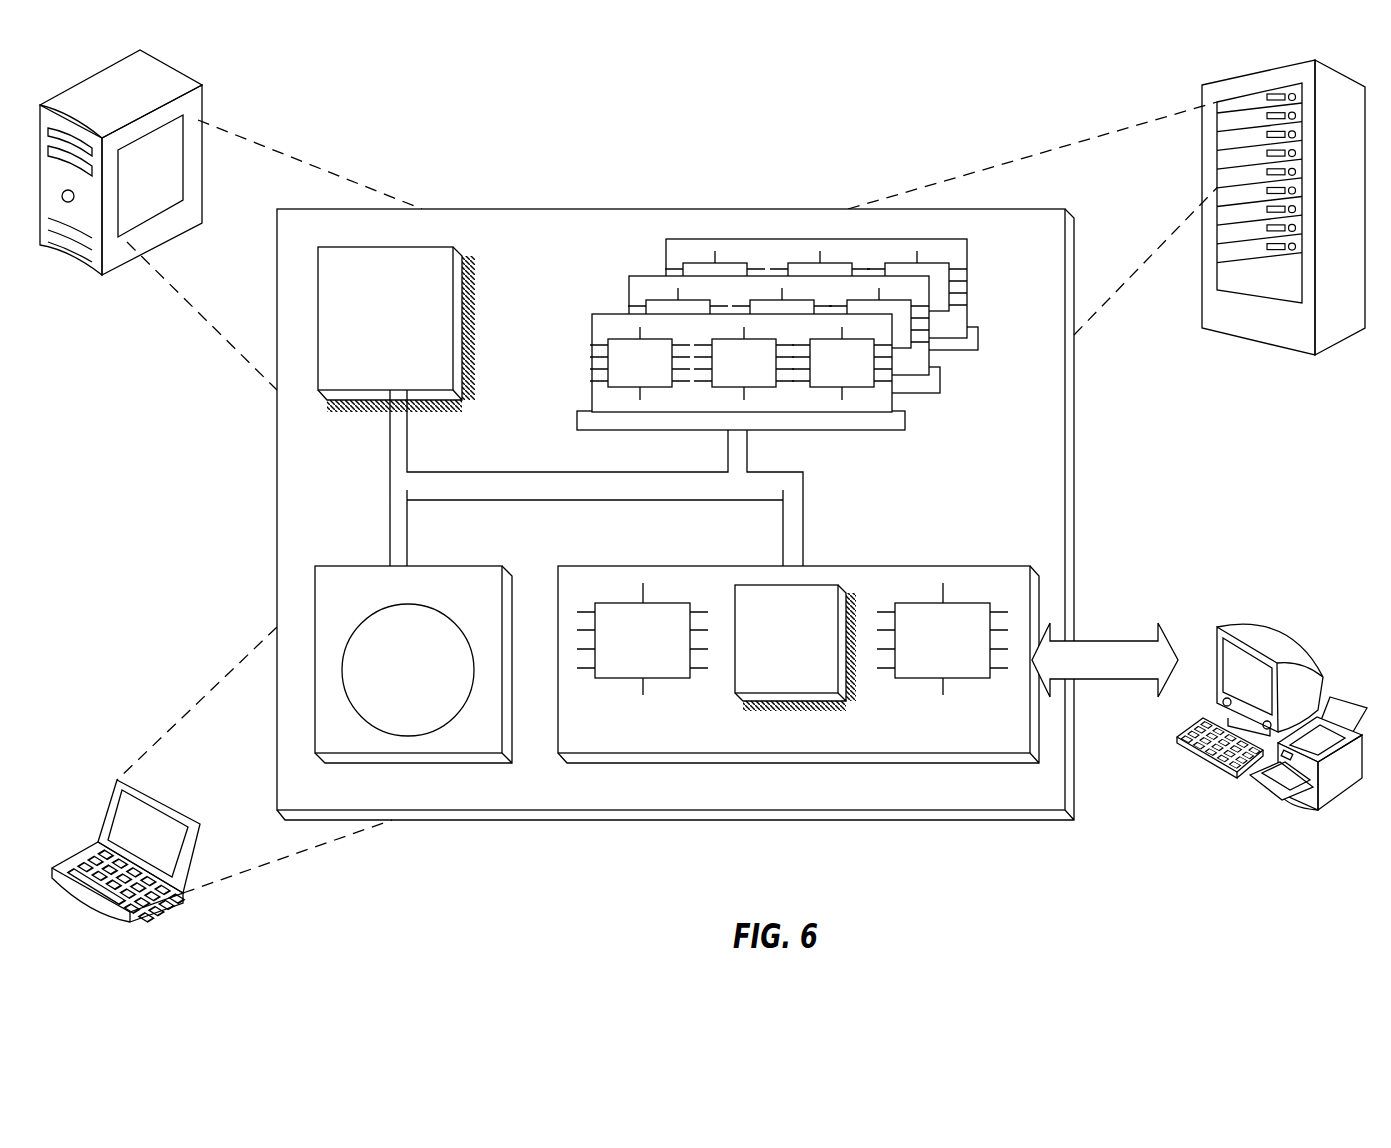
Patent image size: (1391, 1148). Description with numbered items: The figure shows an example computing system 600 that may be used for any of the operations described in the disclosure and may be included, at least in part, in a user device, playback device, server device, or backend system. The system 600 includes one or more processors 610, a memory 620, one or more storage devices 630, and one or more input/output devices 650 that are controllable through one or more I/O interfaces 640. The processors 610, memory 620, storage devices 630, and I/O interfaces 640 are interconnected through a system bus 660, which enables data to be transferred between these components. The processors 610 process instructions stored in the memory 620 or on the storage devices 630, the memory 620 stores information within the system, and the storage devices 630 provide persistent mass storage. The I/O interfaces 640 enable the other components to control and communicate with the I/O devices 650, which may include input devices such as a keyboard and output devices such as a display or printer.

The computing system 600 is at (487, 124).
The processor 610 is at (446, 384).
The memory 620 is at (976, 393).
The storage device 630 is at (492, 744).
The I/O interface 640 is at (911, 742).
The I/O device 650 is at (1217, 630).
The system bus 660 is at (592, 489).